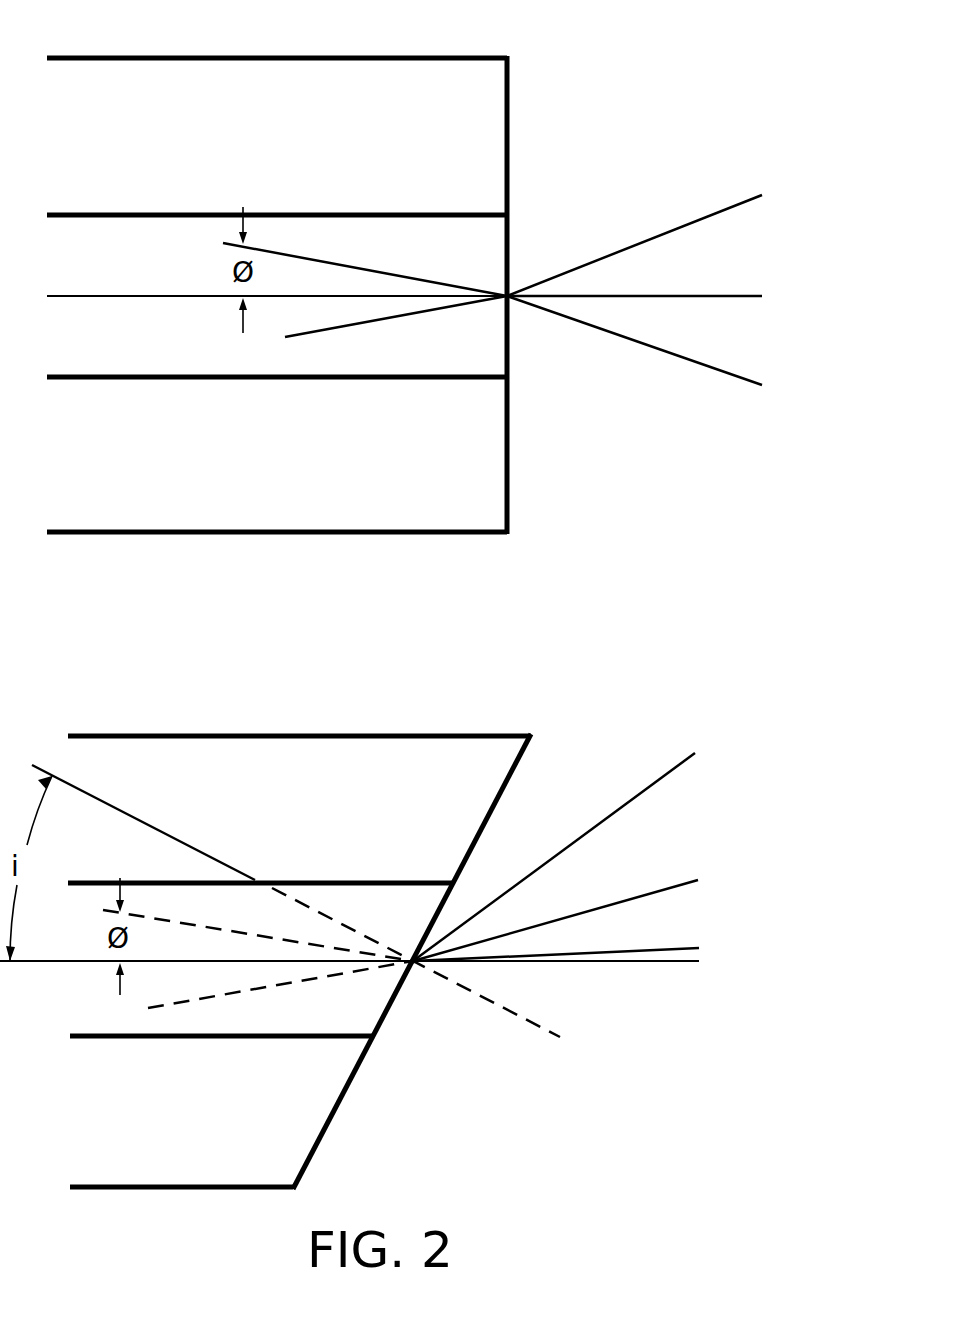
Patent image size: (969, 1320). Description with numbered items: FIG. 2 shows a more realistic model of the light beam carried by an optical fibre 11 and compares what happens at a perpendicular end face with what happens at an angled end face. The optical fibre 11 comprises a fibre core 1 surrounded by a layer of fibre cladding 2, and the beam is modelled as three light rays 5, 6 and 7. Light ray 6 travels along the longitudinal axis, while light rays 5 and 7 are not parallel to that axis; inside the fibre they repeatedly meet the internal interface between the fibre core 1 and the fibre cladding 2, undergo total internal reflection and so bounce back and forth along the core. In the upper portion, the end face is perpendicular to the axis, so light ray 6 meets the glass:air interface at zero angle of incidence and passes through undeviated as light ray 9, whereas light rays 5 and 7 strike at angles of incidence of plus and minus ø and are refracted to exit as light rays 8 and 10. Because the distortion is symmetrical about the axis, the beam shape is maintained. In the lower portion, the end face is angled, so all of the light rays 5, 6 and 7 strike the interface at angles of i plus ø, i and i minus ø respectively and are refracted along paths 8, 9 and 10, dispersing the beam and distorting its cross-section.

The fibre core 1 is at (510, 242).
The fibre cladding 2 is at (510, 118).
The light ray 5 is at (422, 274).
The light ray 6 is at (130, 300).
The light ray 7 is at (418, 313).
The light ray 8 is at (668, 232).
The light ray 9 is at (738, 294).
The light ray 10 is at (654, 350).
The optical fibre 11 is at (178, 57).